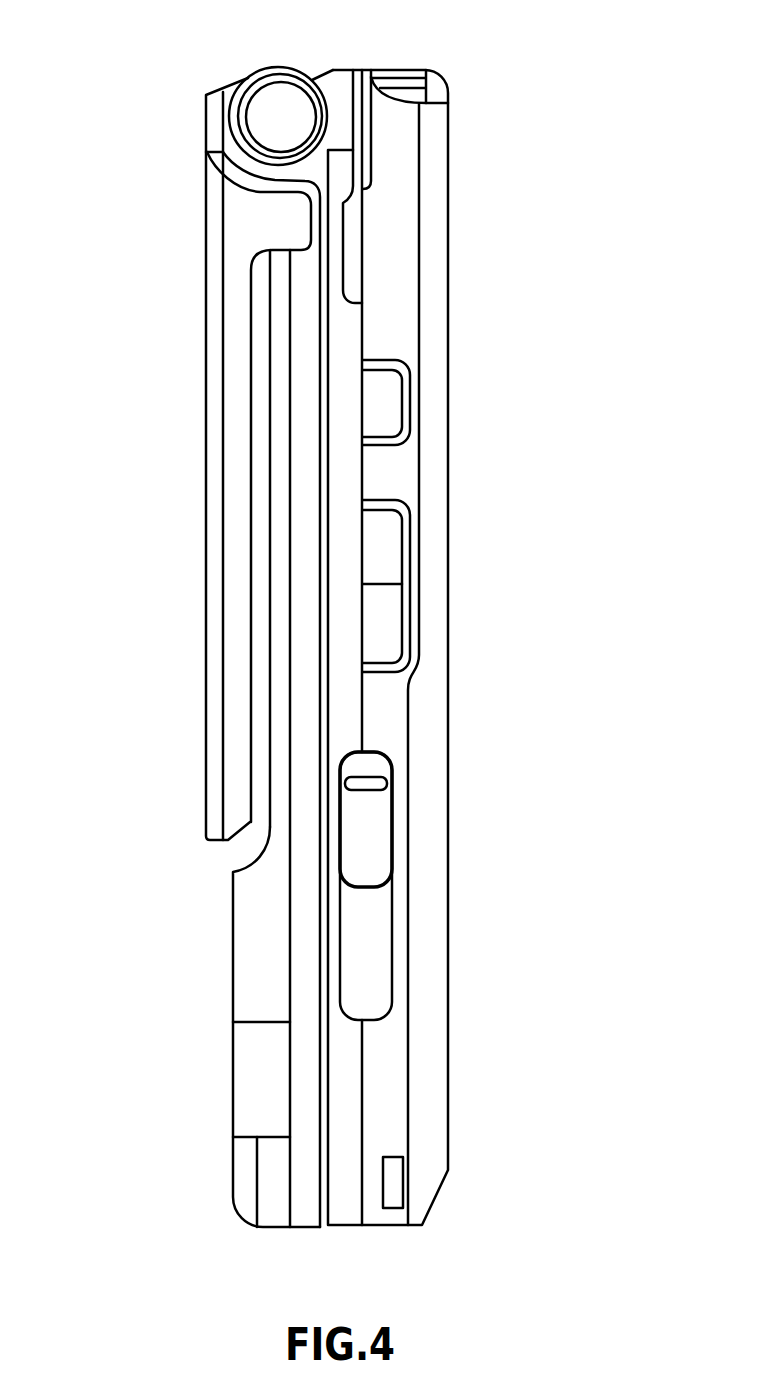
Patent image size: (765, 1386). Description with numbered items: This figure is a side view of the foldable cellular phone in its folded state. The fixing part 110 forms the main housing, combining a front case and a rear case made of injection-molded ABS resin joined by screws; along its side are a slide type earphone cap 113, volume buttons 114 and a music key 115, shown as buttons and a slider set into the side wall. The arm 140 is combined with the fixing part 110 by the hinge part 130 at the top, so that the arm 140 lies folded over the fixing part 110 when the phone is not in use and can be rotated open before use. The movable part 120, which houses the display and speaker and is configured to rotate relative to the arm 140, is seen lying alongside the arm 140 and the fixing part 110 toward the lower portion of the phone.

The fixing part 110 is at (456, 275).
The slide type earphone cap 113 is at (378, 833).
The volume buttons 114 is at (388, 552).
The music key 115 is at (390, 407).
The movable part 120 is at (228, 1035).
The hinge part 130 is at (285, 98).
The arm 140 is at (196, 222).